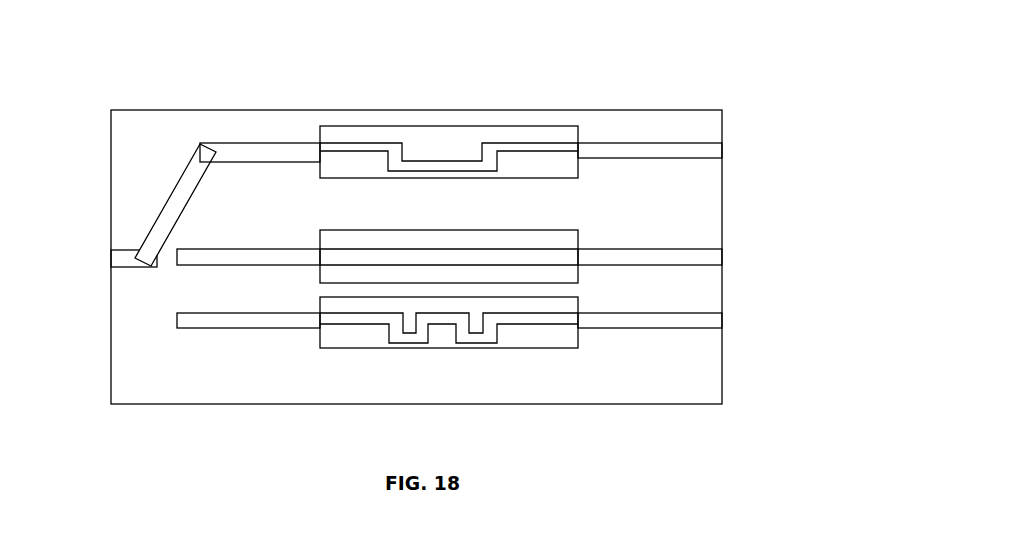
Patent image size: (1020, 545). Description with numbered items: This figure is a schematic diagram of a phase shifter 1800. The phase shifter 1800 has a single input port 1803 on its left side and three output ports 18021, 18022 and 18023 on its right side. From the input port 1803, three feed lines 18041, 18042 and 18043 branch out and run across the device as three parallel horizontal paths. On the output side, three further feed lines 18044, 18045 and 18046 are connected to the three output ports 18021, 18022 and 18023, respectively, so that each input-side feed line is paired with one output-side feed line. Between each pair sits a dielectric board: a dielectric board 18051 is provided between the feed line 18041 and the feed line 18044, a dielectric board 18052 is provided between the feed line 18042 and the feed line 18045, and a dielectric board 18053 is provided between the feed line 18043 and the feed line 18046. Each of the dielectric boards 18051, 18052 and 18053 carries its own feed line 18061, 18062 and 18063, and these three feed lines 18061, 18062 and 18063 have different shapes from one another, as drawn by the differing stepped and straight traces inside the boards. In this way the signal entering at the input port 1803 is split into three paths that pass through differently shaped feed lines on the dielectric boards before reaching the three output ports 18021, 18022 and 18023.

The phase shifter 1800 is at (765, 52).
The input port 1803 is at (111, 260).
The feed line 18041 is at (256, 143).
The feed line 18042 is at (247, 248).
The feed line 18043 is at (235, 328).
The feed line 18044 is at (652, 142).
The feed line 18045 is at (655, 246).
The feed line 18046 is at (644, 328).
The dielectric board 18051 is at (364, 126).
The dielectric board 18052 is at (343, 230).
The dielectric board 18053 is at (358, 348).
The feed line 18061 is at (456, 126).
The feed line 18062 is at (468, 230).
The feed line 18063 is at (455, 348).
The output port 18021 is at (722, 148).
The output port 18022 is at (722, 252).
The output port 18023 is at (722, 317).